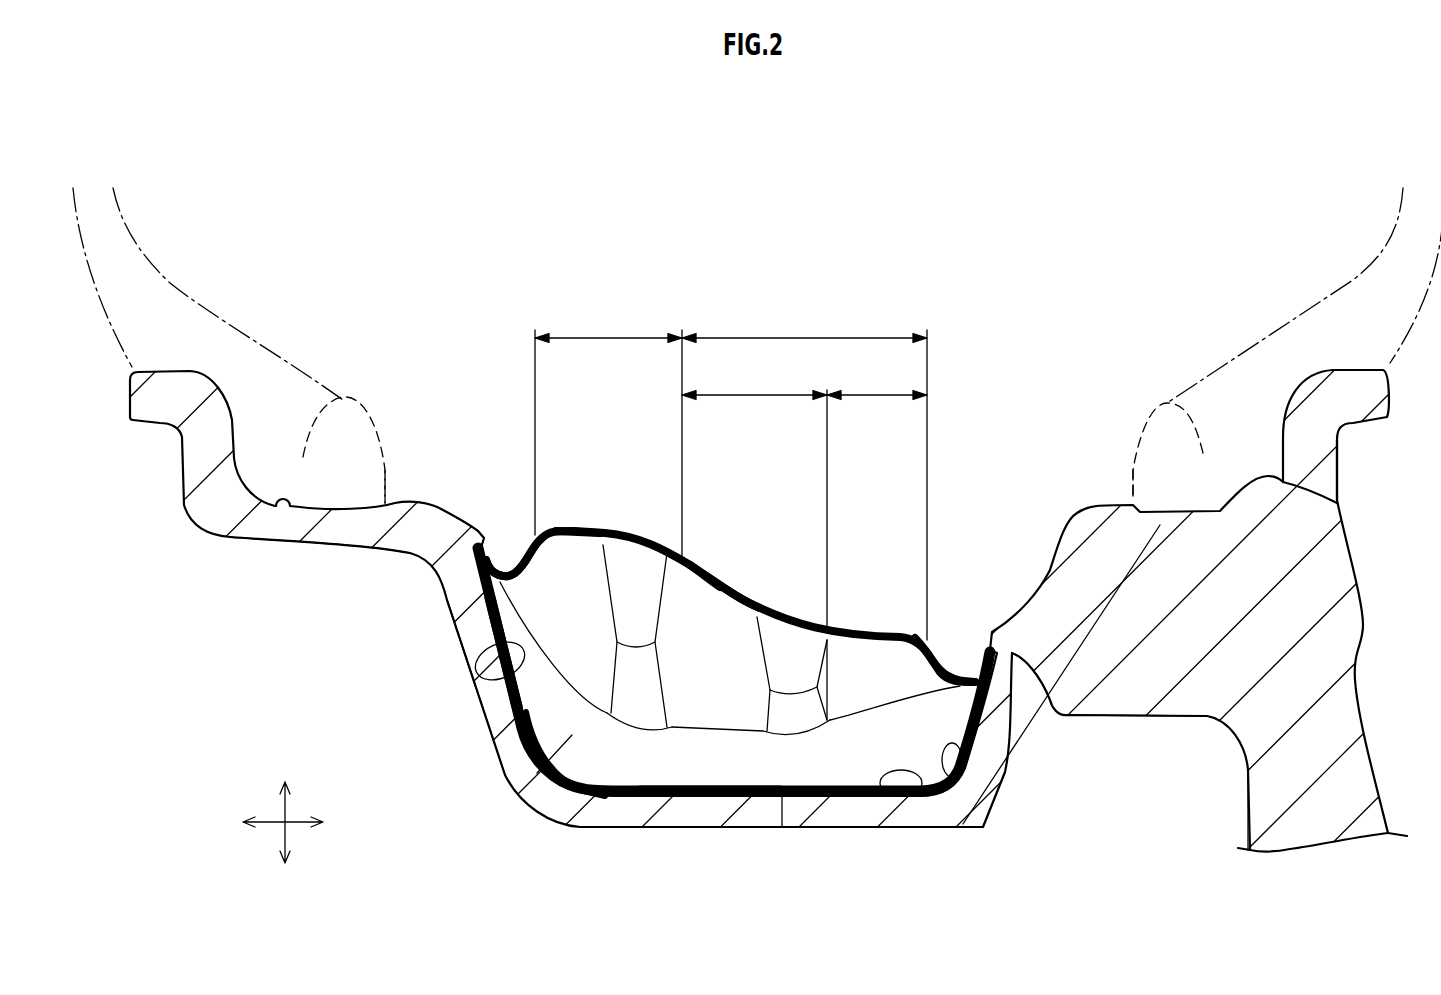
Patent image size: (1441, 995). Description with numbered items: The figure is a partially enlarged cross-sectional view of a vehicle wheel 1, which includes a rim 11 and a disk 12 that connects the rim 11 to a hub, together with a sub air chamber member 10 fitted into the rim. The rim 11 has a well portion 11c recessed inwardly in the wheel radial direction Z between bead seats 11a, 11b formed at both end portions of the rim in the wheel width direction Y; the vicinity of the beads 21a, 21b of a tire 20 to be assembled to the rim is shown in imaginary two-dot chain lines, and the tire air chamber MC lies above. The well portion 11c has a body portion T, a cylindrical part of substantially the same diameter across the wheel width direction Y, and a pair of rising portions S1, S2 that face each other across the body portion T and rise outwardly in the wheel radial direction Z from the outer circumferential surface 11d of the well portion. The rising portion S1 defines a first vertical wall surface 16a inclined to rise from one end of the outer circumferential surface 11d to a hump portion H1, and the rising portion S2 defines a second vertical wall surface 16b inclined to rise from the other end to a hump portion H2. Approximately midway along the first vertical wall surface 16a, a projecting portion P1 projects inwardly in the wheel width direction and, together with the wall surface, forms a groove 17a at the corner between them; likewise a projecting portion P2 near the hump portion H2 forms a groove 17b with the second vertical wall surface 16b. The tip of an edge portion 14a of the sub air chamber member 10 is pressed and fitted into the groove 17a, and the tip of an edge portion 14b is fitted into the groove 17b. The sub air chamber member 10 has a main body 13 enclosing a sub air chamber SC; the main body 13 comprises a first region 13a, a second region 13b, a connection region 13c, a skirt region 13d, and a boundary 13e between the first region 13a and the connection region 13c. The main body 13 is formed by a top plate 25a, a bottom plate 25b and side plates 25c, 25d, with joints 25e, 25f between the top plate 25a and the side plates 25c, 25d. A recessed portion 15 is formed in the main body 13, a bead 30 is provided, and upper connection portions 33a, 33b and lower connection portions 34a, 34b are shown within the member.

The vehicle wheel 1 is at (1395, 452).
The sub air chamber member 10 is at (595, 525).
The rim 11 is at (180, 470).
The bead seat 11a is at (1337, 503).
The bead seat 11b is at (278, 542).
The well portion 11c is at (786, 568).
The outer circumferential surface 11d is at (916, 798).
The disk 12 is at (1350, 782).
The main body 13 is at (622, 536).
The first region 13a is at (605, 337).
The second region 13b is at (808, 336).
The connection region 13c is at (753, 393).
The skirt region 13d is at (872, 393).
The boundary 13e is at (707, 548).
The edge portion 14a is at (1057, 718).
The edge portion 14b is at (443, 572).
The recessed portion 15 is at (855, 578).
The first vertical wall surface 16a is at (983, 790).
The second vertical wall surface 16b is at (478, 668).
The groove 17a is at (953, 660).
The groove 17b is at (497, 550).
The tire 20 is at (173, 275).
The bead 21a is at (1167, 403).
The bead 21b is at (343, 397).
The top plate 25a is at (573, 542).
The bottom plate 25b is at (713, 794).
The side plate 25c is at (1003, 772).
The side plate 25d is at (517, 700).
The joint 25e is at (970, 752).
The joint 25f is at (507, 590).
The bead 30 is at (532, 805).
The upper connection portion 33a is at (666, 590).
The upper connection portion 33b is at (829, 650).
The lower connection portion 34a is at (608, 688).
The lower connection portion 34b is at (762, 706).
The tire air chamber MC is at (737, 242).
The sub air chamber SC is at (732, 669).
The rising portion S1 is at (1040, 627).
The rising portion S2 is at (462, 640).
The projecting portion P1 is at (983, 632).
The projecting portion P2 is at (481, 533).
The hump portion H1 is at (1103, 503).
The hump portion H2 is at (400, 507).
The body portion T is at (782, 812).
The wheel radial direction Z is at (285, 806).
The wheel width direction Y is at (294, 821).